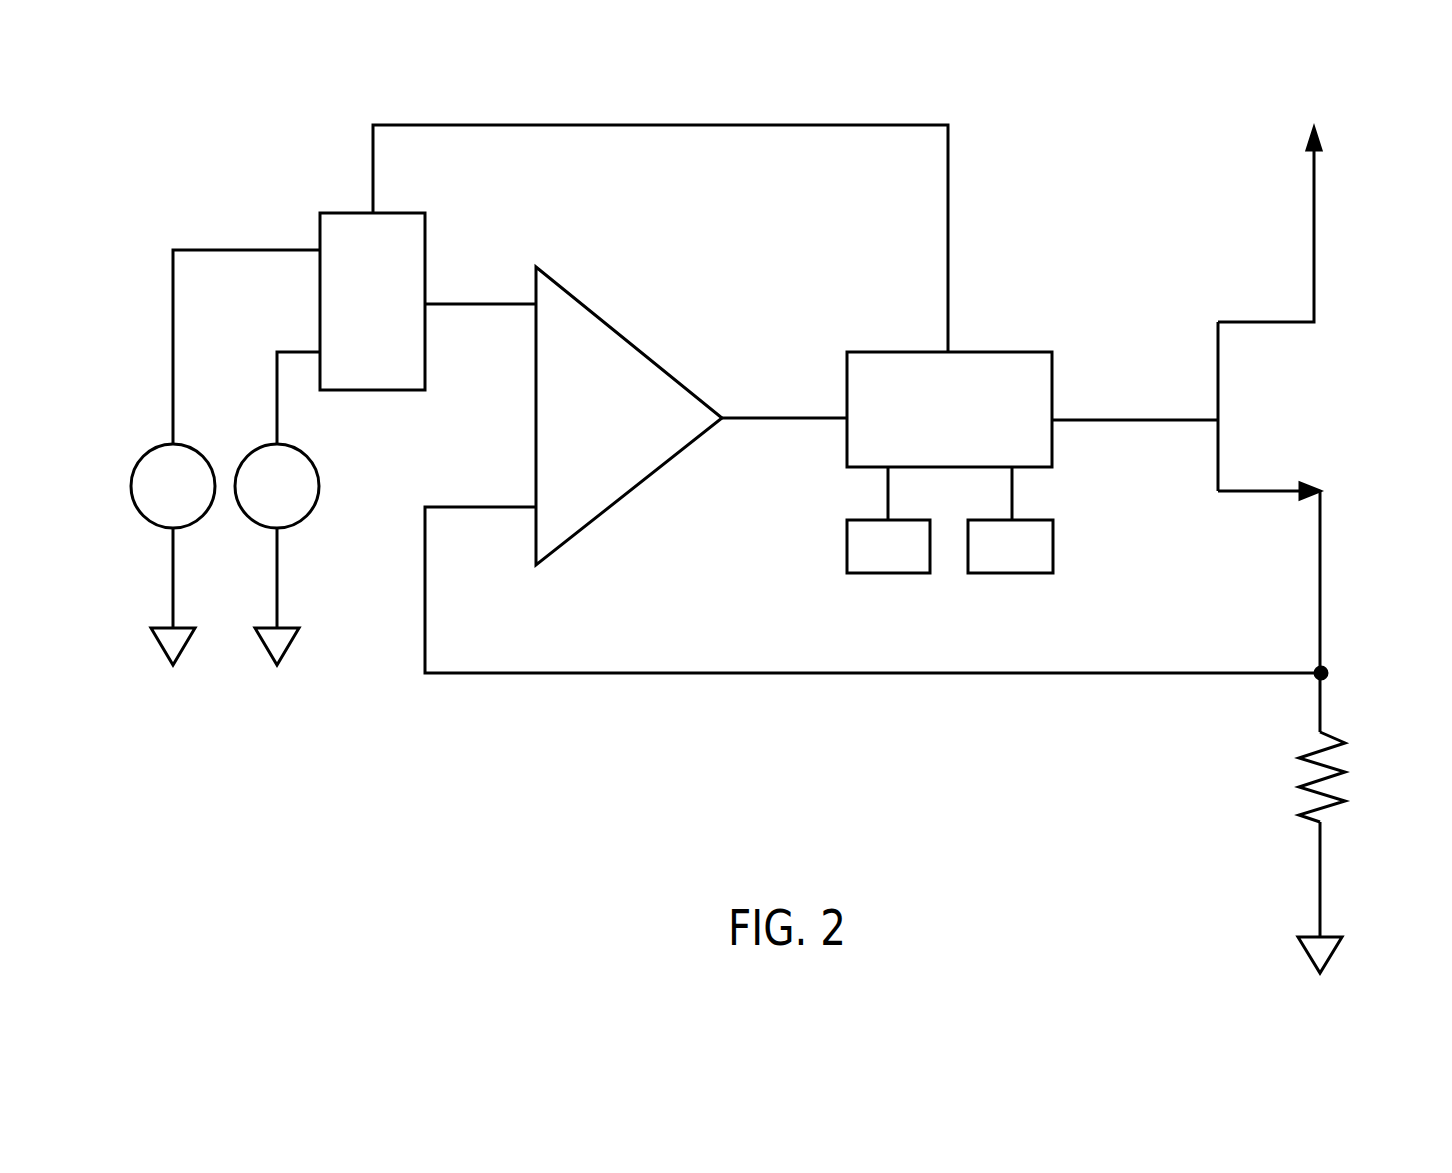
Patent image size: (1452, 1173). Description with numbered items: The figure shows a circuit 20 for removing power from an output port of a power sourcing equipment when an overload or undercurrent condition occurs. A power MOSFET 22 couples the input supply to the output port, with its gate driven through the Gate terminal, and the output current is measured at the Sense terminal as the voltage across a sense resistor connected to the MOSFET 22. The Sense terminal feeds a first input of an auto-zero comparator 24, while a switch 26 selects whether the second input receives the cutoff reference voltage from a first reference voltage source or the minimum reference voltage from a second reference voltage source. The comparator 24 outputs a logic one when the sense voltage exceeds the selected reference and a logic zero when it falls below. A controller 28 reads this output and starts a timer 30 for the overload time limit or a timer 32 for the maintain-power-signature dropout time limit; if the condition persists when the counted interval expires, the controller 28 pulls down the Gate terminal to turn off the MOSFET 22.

The circuit 20 is at (777, 191).
The power MOSFET 22 is at (1247, 322).
The auto-zero comparator 24 is at (590, 309).
The switch 26 is at (425, 247).
The controller 28 is at (995, 352).
The timer 30 is at (888, 573).
The timer 32 is at (1012, 573).